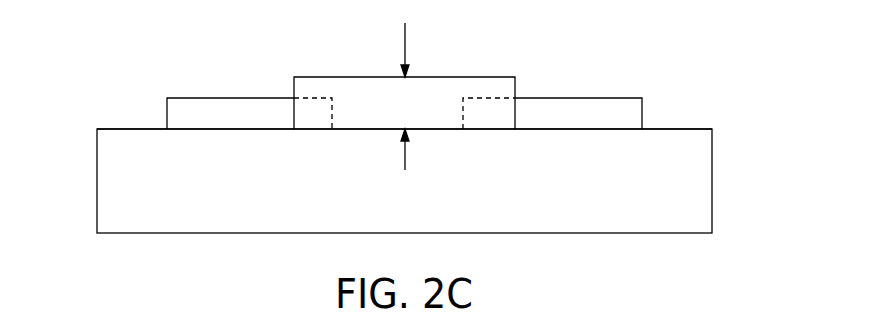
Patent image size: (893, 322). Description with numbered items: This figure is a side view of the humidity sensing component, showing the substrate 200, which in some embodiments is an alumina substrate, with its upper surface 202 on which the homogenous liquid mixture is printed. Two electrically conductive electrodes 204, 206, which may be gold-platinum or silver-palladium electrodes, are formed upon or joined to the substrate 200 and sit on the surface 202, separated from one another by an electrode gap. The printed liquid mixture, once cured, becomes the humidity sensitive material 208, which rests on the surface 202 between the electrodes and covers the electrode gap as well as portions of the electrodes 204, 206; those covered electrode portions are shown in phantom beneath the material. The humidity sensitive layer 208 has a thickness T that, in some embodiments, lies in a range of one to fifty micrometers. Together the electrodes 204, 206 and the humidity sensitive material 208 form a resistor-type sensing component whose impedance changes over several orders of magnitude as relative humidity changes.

The substrate 200 is at (712, 181).
The surface 202 is at (678, 128).
The electrode 204 is at (234, 97).
The electrode 206 is at (578, 97).
The humidity sensitive material 208 is at (450, 76).
The thickness T is at (404, 52).